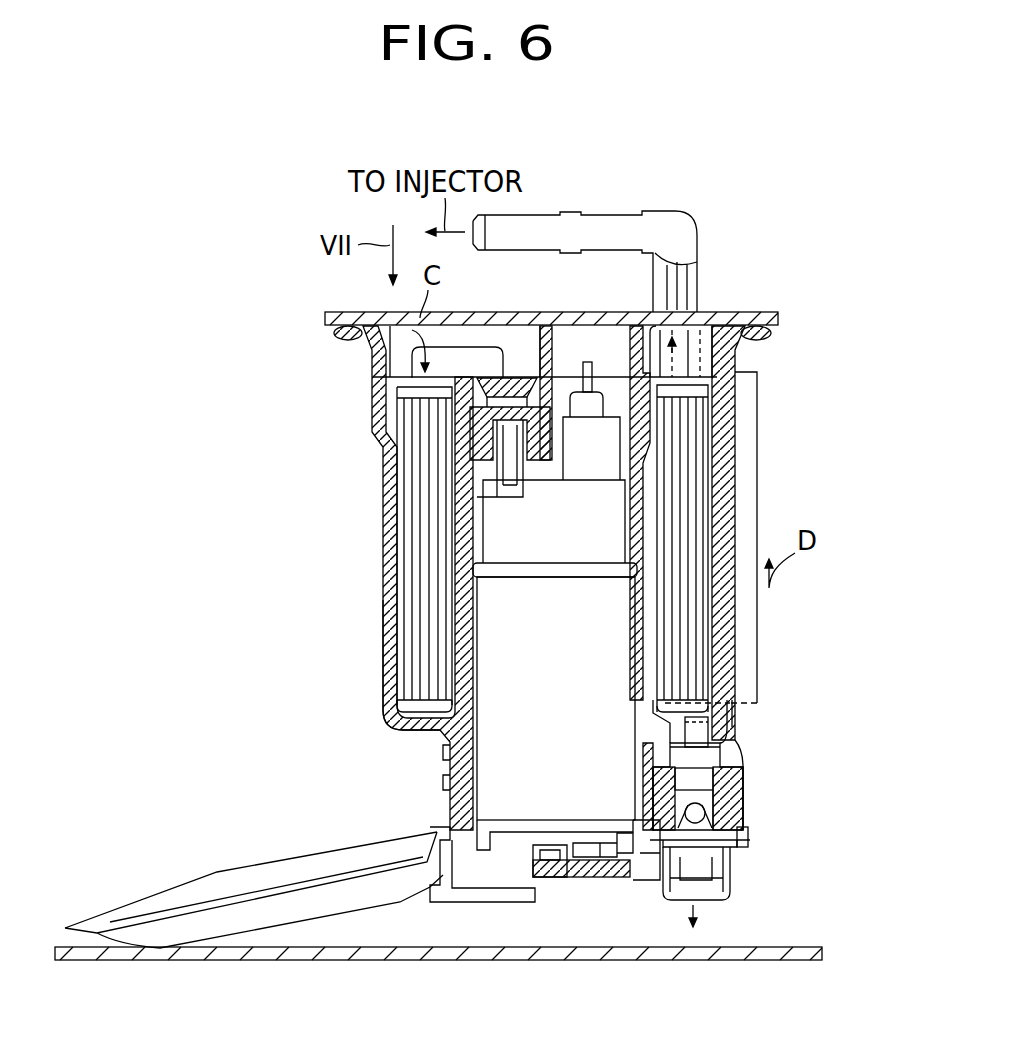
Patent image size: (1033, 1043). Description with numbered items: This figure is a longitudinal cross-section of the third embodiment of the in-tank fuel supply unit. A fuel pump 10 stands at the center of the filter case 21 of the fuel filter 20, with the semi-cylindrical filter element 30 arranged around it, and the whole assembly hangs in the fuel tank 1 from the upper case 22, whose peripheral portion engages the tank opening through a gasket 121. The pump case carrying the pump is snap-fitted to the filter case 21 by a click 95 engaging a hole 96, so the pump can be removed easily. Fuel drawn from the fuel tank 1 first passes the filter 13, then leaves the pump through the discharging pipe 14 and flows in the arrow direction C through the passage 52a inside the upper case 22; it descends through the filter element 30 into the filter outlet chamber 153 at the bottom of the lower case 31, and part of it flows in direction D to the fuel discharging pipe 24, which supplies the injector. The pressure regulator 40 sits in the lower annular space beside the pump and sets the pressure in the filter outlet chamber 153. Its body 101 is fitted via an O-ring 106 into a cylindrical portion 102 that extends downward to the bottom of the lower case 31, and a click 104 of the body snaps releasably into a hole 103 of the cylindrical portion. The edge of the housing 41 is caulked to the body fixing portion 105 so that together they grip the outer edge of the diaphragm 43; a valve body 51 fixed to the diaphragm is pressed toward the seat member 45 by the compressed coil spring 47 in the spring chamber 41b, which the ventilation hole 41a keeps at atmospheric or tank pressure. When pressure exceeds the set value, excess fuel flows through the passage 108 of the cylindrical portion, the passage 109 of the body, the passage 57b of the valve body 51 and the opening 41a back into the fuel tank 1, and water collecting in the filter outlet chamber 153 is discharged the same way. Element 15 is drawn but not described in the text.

The fuel tank 1 is at (795, 960).
The fuel pump 10 is at (618, 635).
The filter 13 is at (182, 893).
The discharging pipe 14 is at (478, 482).
The fuel passage 15 is at (593, 397).
The fuel filter 20 is at (378, 497).
The filter case 21 is at (359, 425).
The upper case 22 is at (372, 374).
The fuel discharging pipe 24 is at (617, 225).
The filter element 30 is at (398, 596).
The lower case 31 is at (387, 677).
The pressure regulator 40 is at (740, 869).
The housing 41 is at (733, 913).
The ventilation hole 41a is at (733, 885).
The spring chamber 41b is at (655, 893).
The diaphragm 43 is at (598, 880).
The seat member 45 is at (705, 880).
The compressed coil spring 47 is at (627, 893).
The valve body 51 is at (540, 895).
The passage 52a is at (518, 335).
The passage 57b is at (670, 890).
The click 95 is at (452, 775).
The hole 96 is at (450, 757).
The body 101 is at (740, 783).
The cylindrical portion 102 is at (727, 750).
The hole 103 is at (733, 767).
The click 104 is at (743, 800).
The body fixing portion 105 is at (750, 837).
The O-ring 106 is at (698, 755).
The passage 108 is at (668, 748).
The passage 109 is at (683, 752).
The gasket 121 is at (752, 318).
The filter outlet chamber 153 is at (398, 710).